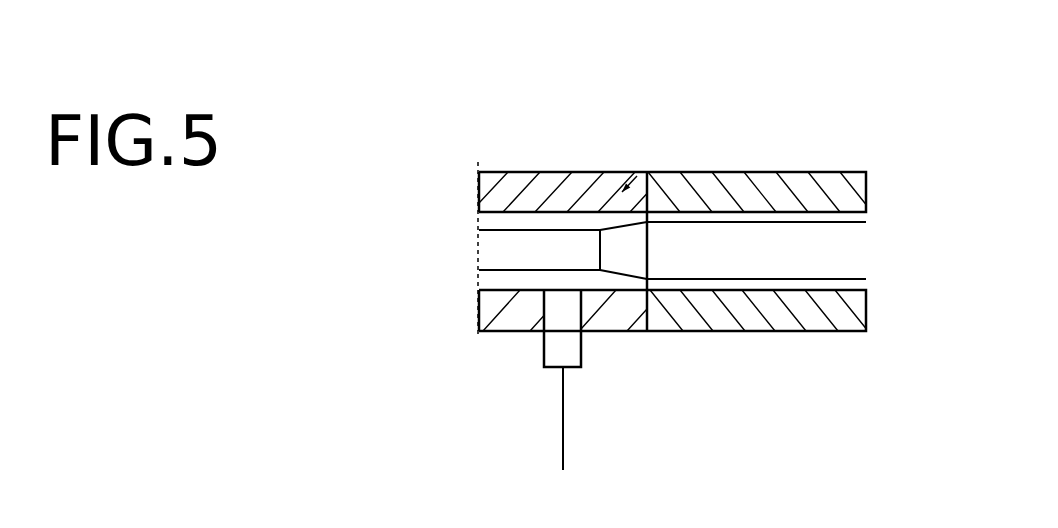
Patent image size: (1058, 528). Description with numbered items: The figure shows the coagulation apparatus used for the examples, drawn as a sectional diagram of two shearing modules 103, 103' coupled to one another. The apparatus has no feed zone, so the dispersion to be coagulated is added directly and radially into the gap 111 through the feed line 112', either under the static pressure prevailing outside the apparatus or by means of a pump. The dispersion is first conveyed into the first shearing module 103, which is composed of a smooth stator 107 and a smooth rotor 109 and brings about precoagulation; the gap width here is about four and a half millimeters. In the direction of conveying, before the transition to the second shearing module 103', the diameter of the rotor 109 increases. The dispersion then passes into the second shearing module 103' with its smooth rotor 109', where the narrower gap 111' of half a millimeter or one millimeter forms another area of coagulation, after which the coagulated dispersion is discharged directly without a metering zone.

The first shearing module 103 is at (563, 195).
The second shearing module 103' is at (756, 194).
The stator 107 is at (646, 172).
The rotor 109 is at (535, 173).
The rotor 109' is at (756, 163).
The gap 111 is at (627, 317).
The gap 111' is at (761, 355).
The feed line 112' is at (519, 382).